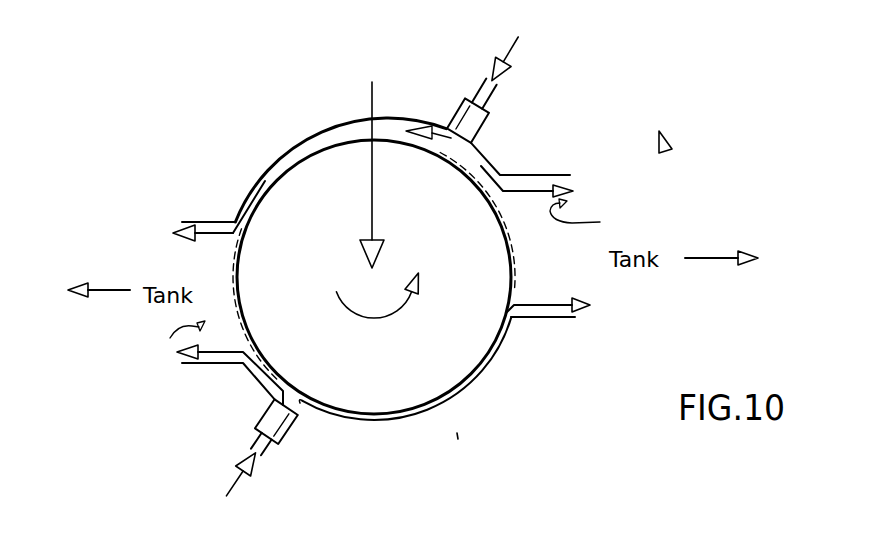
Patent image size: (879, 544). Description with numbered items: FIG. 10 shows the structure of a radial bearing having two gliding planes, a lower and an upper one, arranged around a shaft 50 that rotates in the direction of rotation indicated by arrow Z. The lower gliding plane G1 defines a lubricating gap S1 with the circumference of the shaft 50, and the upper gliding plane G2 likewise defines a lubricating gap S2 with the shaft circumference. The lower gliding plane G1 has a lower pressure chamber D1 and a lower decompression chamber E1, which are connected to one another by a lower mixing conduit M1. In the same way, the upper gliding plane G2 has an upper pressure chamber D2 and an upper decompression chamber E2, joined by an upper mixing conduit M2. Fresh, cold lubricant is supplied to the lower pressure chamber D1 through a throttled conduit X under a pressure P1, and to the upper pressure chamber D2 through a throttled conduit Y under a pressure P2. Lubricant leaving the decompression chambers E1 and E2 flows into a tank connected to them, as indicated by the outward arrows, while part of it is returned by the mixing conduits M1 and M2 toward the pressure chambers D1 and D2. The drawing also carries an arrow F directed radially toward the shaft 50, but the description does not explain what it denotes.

The shaft 50 is at (468, 283).
The lubricating gap S1 is at (441, 400).
The lubricating gap S2 is at (352, 124).
The lower gliding plane G1 is at (434, 438).
The upper gliding plane G2 is at (305, 118).
The lower pressure chamber D1 is at (286, 437).
The upper pressure chamber D2 is at (480, 120).
The lower mixing conduit M1 is at (242, 378).
The upper mixing conduit M2 is at (522, 170).
The pressure P1 is at (225, 485).
The pressure P2 is at (500, 52).
The lower decompression chamber E1 is at (167, 360).
The upper decompression chamber E2 is at (638, 233).
The throttled conduit X is at (262, 455).
The throttled conduit Y is at (488, 95).
The force direction F is at (367, 175).
The arrow Z is at (377, 313).